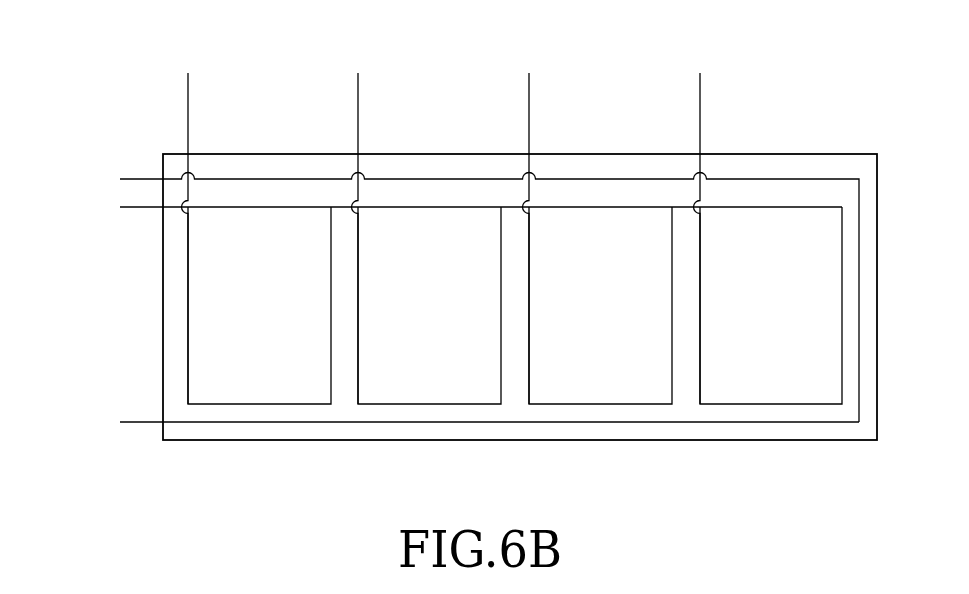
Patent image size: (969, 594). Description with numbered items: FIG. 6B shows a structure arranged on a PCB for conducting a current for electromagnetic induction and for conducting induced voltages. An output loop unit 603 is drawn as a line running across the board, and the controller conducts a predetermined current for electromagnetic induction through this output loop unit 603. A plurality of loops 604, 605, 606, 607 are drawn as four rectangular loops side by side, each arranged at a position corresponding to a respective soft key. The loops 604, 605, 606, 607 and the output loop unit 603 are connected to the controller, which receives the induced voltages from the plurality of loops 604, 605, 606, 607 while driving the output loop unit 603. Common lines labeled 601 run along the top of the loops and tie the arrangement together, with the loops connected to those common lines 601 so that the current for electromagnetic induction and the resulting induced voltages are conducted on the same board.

The common electrode line (T common / R common) 601 is at (67, 161).
The output loop unit 603 is at (67, 399).
The loop 604 is at (190, 111).
The loop 605 is at (360, 111).
The loop 606 is at (531, 111).
The loop 607 is at (702, 111).